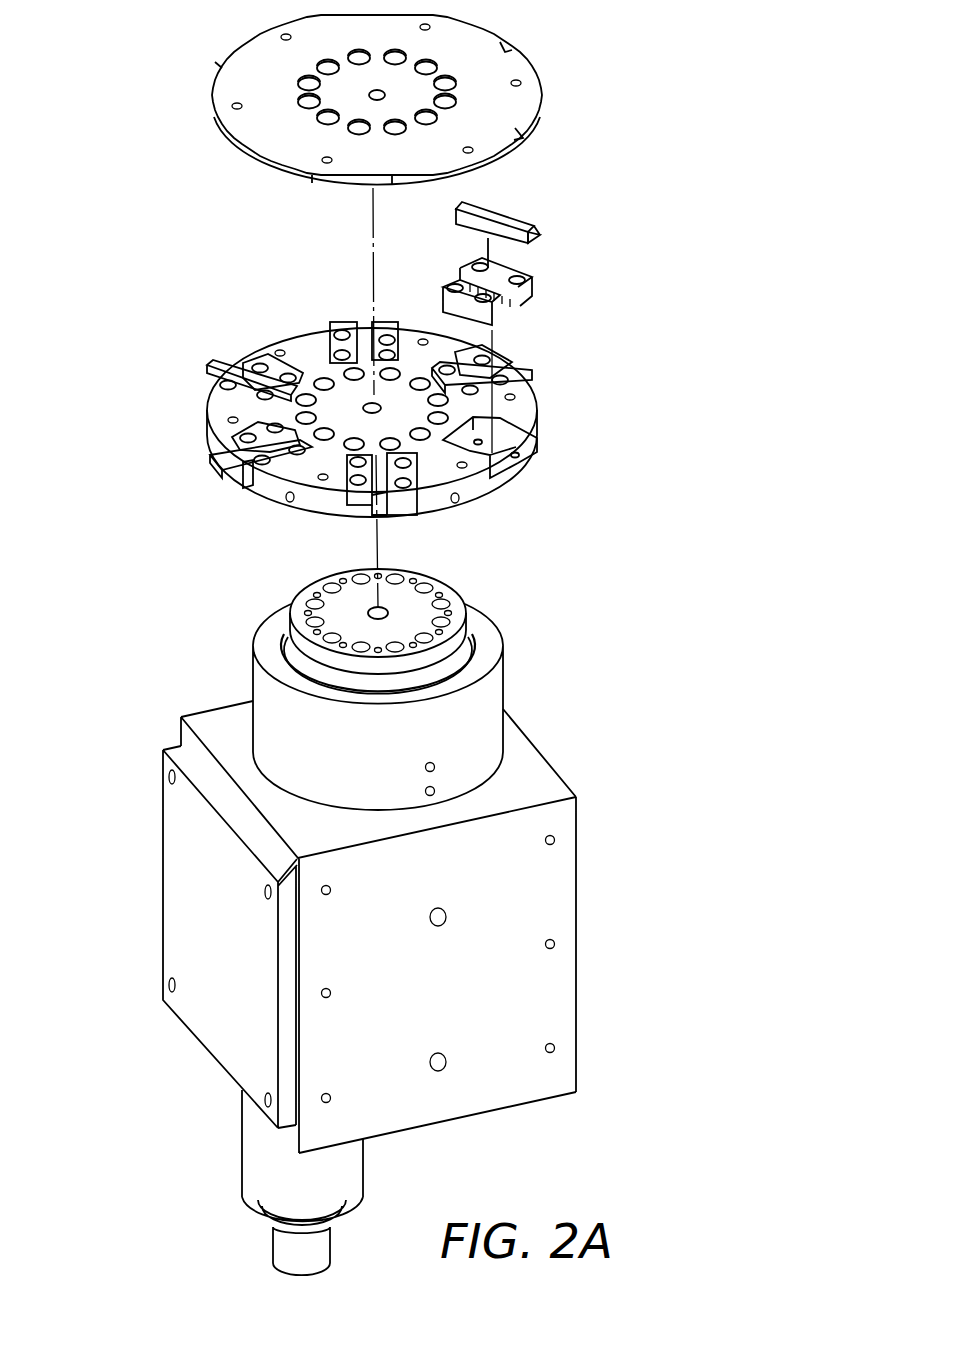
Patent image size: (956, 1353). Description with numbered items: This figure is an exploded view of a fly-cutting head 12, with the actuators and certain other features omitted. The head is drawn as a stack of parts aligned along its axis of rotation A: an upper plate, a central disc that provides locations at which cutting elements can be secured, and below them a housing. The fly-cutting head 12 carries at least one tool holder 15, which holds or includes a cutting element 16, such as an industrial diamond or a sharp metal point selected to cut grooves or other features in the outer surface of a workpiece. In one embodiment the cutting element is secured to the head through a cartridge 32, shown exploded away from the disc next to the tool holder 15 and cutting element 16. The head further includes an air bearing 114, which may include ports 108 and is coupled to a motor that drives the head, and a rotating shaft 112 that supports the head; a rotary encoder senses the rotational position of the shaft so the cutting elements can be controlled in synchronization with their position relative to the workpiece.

The fly-cutting head 12 is at (158, 216).
The tool holder 15 is at (523, 222).
The cutting element 16 is at (540, 237).
The cartridge 32 is at (538, 292).
The ports 108 is at (426, 791).
The rotating shaft 112 is at (455, 654).
The air bearing 114 is at (468, 694).
The axis of rotation A is at (373, 272).